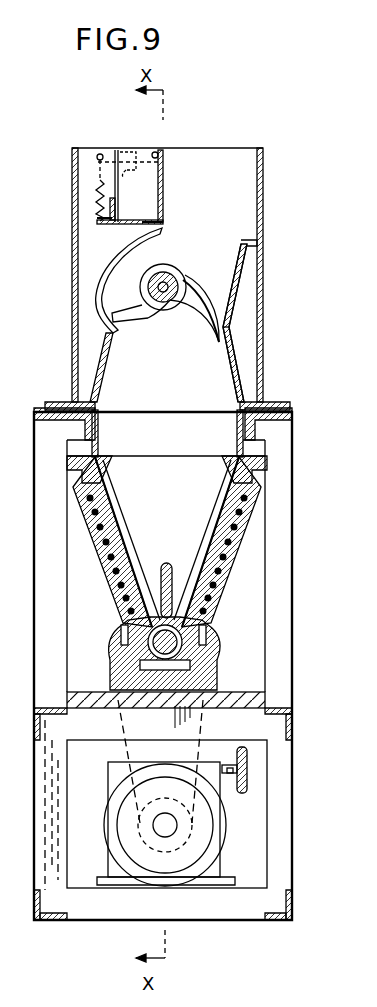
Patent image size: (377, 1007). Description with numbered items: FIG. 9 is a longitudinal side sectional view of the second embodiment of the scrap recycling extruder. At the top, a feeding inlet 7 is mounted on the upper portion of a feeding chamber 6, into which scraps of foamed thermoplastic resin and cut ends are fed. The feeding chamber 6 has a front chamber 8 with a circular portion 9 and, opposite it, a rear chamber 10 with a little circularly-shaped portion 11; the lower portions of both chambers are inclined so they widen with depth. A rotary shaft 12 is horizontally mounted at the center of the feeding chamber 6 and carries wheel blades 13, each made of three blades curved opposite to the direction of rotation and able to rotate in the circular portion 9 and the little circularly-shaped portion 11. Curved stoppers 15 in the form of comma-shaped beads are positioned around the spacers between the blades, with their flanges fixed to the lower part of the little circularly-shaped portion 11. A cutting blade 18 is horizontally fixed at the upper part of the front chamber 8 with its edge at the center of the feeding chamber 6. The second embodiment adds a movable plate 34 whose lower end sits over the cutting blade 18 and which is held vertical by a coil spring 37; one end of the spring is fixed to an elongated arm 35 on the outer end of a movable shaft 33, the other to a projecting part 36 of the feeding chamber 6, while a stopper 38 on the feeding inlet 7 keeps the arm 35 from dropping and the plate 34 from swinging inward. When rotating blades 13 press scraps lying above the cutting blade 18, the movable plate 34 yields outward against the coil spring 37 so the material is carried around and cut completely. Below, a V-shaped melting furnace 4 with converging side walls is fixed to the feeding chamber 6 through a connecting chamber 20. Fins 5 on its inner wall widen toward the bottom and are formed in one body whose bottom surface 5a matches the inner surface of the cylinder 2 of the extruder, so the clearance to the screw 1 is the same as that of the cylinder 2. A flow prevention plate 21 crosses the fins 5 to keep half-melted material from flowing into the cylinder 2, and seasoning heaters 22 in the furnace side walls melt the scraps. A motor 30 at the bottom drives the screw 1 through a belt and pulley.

The screw 1 is at (102, 704).
The cylinder 2 is at (120, 654).
The V-shaped melting furnace 4 is at (195, 476).
The fins 5 is at (207, 513).
The bottom surface 5a is at (128, 608).
The feeding chamber 6 is at (94, 261).
The feeding inlet 7 is at (241, 222).
The front chamber 8 is at (100, 288).
The circular portion 9 is at (110, 306).
The rear chamber 10 is at (226, 262).
The little circularly-shaped portion 11 is at (223, 294).
The rotary shaft 12 is at (168, 271).
The wheel blades 13 is at (132, 323).
The curved stoppers 15 is at (172, 318).
The cutting blade 18 is at (142, 223).
The connecting chamber 20 is at (62, 436).
The flow prevention plate 21 is at (250, 598).
The seasoning heaters 22 is at (205, 614).
The motor 30 is at (208, 829).
The movable shaft 33 is at (158, 152).
The movable plate 34 is at (163, 183).
The elongated arm 35 is at (100, 153).
The projecting part 36 is at (97, 219).
The coil spring 37 is at (100, 178).
The stopper 38 is at (135, 150).